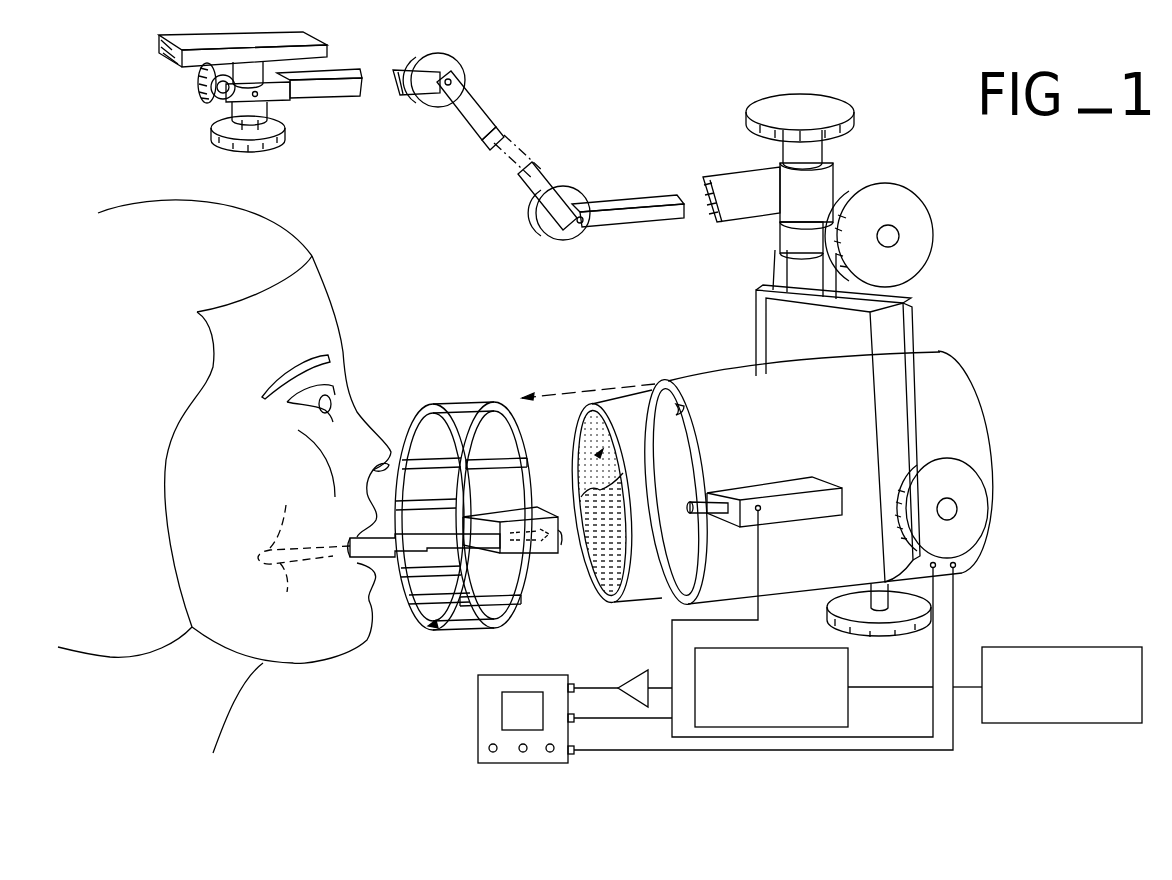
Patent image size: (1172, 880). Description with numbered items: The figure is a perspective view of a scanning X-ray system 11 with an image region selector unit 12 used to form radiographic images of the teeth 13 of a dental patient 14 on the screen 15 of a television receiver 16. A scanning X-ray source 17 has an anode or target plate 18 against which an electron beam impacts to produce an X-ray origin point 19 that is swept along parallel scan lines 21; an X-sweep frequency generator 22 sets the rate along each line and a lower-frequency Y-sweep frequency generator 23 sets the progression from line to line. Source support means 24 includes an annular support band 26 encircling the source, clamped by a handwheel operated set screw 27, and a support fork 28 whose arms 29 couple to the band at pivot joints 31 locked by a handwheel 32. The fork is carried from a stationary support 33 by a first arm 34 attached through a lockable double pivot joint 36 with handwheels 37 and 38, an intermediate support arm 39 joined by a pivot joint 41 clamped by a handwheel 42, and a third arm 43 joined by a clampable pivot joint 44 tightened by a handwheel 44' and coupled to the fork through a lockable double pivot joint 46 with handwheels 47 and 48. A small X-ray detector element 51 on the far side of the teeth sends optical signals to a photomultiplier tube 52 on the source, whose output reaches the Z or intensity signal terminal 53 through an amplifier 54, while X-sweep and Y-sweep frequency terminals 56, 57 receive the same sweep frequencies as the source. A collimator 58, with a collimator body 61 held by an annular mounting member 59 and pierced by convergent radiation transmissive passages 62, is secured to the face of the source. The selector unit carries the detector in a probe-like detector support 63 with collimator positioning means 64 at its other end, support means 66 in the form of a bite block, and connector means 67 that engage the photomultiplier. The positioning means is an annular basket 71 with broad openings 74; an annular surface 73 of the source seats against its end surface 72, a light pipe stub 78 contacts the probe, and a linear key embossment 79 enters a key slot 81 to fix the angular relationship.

The scanning X-ray system 11 is at (867, 353).
The image region selector unit 12 is at (483, 503).
The teeth 13 is at (353, 537).
The dental patient 14 is at (348, 278).
The screen 15 is at (532, 720).
The television receiver 16 is at (496, 656).
The scanning X-ray source 17 is at (837, 457).
The anode or target plate 18 is at (597, 512).
The X-ray origin point 19 is at (612, 532).
The scan lines 21 is at (617, 506).
The X-sweep frequency generator 22 is at (1073, 724).
The Y-sweep frequency generator 23 is at (850, 717).
The source support means 24 is at (541, 233).
The annular support band 26 is at (879, 576).
The handwheel operated set screw 27 is at (832, 613).
The support fork 28 is at (752, 319).
The arms 29 is at (908, 328).
The pivot joints 31 is at (982, 505).
The handwheel 32 is at (988, 513).
The stationary support 33 is at (221, 103).
The first arm 34 is at (330, 86).
The lockable double pivot joint 36 is at (196, 129).
The handwheel 37 is at (203, 79).
The handwheel 38 is at (270, 150).
The intermediate support arm 39 is at (496, 122).
The pivot joint 41 is at (537, 170).
The handwheel 42 is at (432, 109).
The third arm 43 is at (653, 196).
The clampable pivot joint 44 is at (578, 276).
The handwheel 44' is at (530, 213).
The lockable double pivot joint 46 is at (759, 240).
The handwheel 47 is at (831, 97).
The handwheel 48 is at (934, 249).
The X-ray detector element 51 is at (304, 521).
The photomultiplier tube 52 is at (789, 523).
The Z or intensity signal terminal 53 is at (586, 686).
The amplifier 54 is at (652, 699).
The X-sweep frequency terminal 56 is at (581, 755).
The Y-sweep frequency terminal 57 is at (581, 722).
The collimator 58 is at (596, 456).
The annular mounting member 59 is at (597, 518).
The collimator body 61 is at (596, 449).
The radiation transmissive passages 62 is at (594, 427).
The detector support 63 is at (292, 590).
The collimator positioning means 64 is at (434, 404).
The support means 66 is at (386, 572).
The connector means 67 is at (483, 544).
The annular basket 71 is at (456, 404).
The end surface 72 is at (530, 606).
The annular surface 73 is at (687, 412).
The broad openings 74 is at (512, 513).
The light pipe stub 78 is at (686, 514).
The linear key embossment 79 is at (638, 604).
The key slot 81 is at (432, 626).